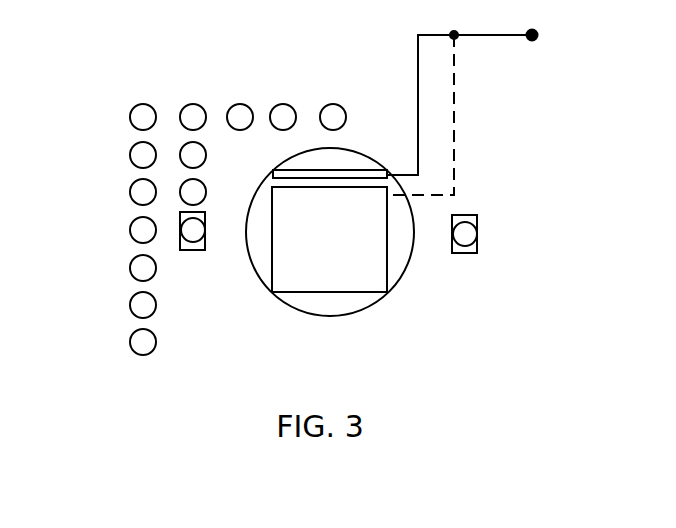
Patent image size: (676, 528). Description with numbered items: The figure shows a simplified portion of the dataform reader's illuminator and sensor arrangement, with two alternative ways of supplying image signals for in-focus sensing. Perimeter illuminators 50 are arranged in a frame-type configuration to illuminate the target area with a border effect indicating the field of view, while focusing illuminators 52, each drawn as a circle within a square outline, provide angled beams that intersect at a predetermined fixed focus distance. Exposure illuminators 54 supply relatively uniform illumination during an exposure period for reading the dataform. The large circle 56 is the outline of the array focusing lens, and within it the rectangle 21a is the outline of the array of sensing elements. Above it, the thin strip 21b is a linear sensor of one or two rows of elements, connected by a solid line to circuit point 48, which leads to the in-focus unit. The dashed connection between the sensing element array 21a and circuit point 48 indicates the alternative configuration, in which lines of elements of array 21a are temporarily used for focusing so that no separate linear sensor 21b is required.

The perimeter illuminators 50 is at (192, 107).
The exposure illuminators 54 is at (200, 145).
The focusing illuminators 52 is at (192, 250).
The central lens 56 is at (290, 307).
The array of sensing elements 21a is at (362, 278).
The linear sensor 21b is at (298, 170).
The circuit point 48 is at (532, 35).